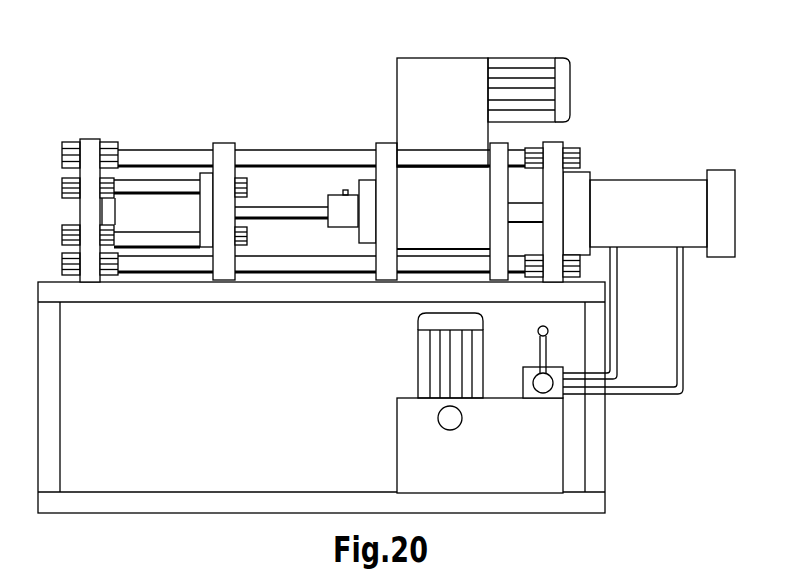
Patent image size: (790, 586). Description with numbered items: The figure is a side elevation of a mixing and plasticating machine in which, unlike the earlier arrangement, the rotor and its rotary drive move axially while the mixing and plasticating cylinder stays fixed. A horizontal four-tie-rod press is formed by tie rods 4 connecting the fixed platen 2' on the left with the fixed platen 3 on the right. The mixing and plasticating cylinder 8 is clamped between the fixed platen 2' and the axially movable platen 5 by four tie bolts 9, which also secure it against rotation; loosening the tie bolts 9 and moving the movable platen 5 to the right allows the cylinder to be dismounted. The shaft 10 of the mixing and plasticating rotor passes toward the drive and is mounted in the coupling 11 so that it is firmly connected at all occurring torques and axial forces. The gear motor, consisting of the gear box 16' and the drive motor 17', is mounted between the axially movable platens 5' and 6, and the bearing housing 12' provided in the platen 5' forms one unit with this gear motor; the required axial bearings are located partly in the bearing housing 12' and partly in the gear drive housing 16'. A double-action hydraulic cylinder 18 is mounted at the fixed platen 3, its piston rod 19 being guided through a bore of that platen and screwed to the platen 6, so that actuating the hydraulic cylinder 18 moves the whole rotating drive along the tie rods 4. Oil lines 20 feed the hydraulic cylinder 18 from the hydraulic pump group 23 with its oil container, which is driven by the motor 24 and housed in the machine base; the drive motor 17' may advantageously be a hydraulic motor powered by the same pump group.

The fixed platen 2' is at (90, 193).
The fixed platen 3 is at (552, 150).
The tie rods 4 is at (275, 160).
The axially movable platen 5 is at (230, 193).
The axially movable platen 5' is at (372, 192).
The axially movable platen 6 is at (498, 150).
The mixing and plasticating cylinder 8 is at (133, 177).
The tie bolts 9 is at (155, 237).
The shaft of the mixing and plasticating rotor 10 is at (283, 209).
The coupling 11 is at (343, 208).
The bearing housing 12' is at (333, 219).
The gear box 16' is at (417, 137).
The drive motor 17' is at (555, 90).
The hydraulic cylinder 18 is at (657, 212).
The piston rod 19 is at (528, 215).
The oil lines 20 is at (680, 353).
The hydraulic pump group 23 is at (530, 418).
The motor of the hydraulic pump group 24 is at (430, 390).